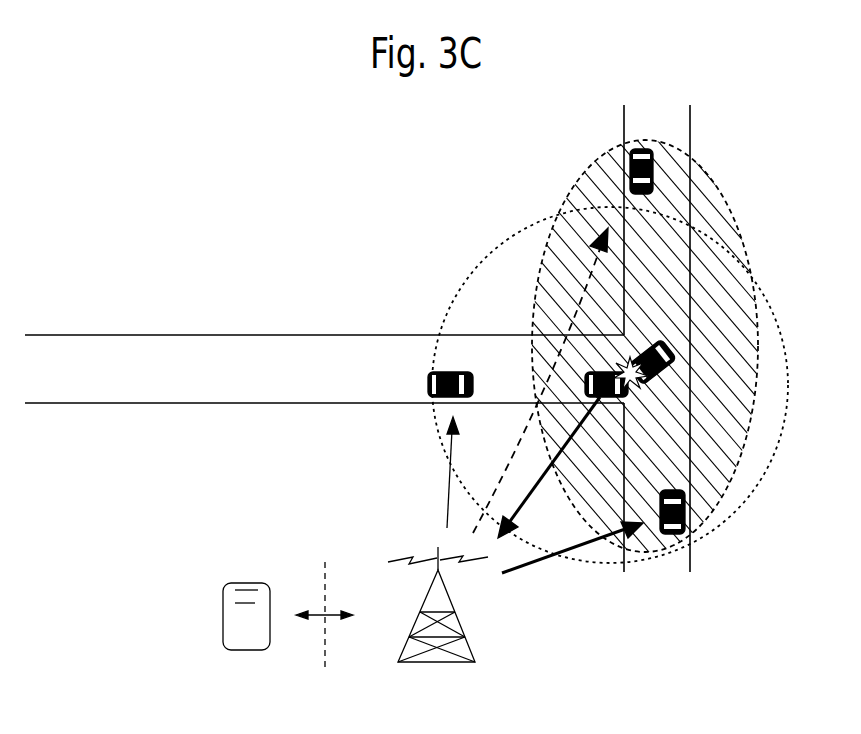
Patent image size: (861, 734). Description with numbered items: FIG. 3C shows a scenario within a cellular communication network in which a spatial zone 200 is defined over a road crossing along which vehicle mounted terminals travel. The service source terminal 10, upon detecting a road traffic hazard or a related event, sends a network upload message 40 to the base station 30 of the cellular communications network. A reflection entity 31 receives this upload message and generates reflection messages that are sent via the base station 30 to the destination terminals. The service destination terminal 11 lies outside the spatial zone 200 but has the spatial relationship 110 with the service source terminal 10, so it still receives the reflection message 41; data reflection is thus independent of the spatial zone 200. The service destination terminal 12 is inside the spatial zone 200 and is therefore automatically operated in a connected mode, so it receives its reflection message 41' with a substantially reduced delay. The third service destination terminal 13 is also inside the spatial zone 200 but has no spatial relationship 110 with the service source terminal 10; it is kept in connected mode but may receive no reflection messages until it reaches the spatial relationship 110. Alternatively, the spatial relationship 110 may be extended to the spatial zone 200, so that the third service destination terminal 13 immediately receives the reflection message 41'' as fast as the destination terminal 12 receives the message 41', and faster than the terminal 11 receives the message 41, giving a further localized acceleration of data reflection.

The service source terminal 10 is at (602, 372).
The service destination terminal 11 is at (430, 373).
The service destination terminal 12 is at (685, 512).
The third service destination terminal 13 is at (653, 182).
The base station 30 is at (465, 637).
The reflection entity 31 is at (222, 634).
The network upload message 40 is at (528, 468).
The reflection message 41 is at (370, 479).
The reflection message 41' is at (576, 576).
The reflection message 41'' is at (436, 380).
The spatial relationship 110 is at (484, 258).
The spatial zone 200 is at (562, 245).